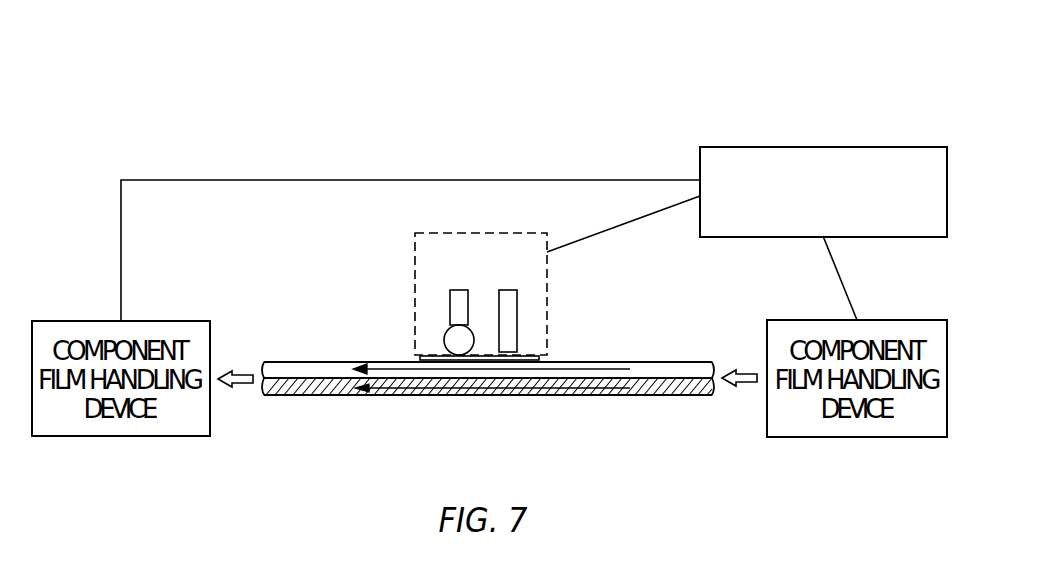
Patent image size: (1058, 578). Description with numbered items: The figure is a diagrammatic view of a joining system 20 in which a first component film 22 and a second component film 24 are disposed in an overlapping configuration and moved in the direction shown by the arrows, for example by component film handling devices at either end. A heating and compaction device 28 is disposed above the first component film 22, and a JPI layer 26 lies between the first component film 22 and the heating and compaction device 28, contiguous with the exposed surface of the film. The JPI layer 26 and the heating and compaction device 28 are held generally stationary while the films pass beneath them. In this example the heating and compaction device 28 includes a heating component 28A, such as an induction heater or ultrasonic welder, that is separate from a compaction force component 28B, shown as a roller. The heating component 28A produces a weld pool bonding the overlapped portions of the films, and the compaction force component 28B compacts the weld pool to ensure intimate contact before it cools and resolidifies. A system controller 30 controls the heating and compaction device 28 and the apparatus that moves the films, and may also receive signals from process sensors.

The system 20 is at (433, 69).
The first component film 22 is at (277, 367).
The second component film 24 is at (284, 396).
The JPI layer 26 is at (540, 358).
The heating and compaction device 28 is at (399, 263).
The heating component 28A is at (508, 313).
The compaction force component 28B is at (458, 307).
The system controller 30 is at (838, 218).